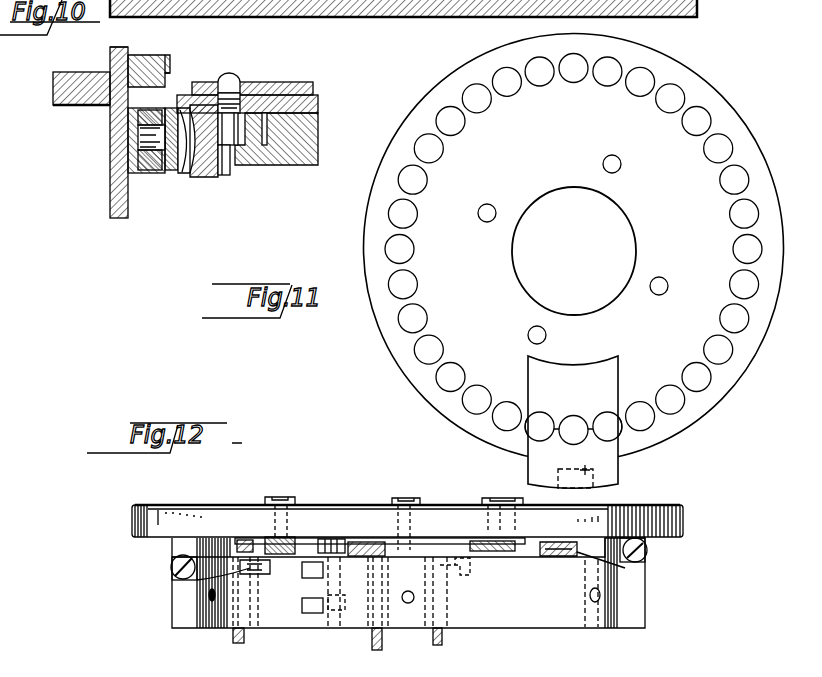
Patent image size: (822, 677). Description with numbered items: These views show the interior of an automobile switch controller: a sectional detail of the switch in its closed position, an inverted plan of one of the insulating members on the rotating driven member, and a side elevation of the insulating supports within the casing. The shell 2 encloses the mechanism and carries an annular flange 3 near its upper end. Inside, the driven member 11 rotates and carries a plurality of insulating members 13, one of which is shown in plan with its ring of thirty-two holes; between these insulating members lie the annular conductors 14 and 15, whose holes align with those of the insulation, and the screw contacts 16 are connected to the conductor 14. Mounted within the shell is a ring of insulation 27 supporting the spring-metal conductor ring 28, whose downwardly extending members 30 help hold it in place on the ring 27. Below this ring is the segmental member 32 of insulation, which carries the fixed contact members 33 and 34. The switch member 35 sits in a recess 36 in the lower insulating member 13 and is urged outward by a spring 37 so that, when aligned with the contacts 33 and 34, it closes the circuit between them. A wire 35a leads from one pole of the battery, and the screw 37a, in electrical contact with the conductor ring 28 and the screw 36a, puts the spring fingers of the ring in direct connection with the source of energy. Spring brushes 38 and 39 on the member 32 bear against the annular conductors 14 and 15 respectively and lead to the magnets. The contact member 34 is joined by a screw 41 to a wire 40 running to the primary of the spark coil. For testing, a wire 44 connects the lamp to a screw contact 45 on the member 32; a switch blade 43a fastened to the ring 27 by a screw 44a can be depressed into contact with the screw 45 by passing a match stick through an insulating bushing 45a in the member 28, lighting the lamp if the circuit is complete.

In FIG. 10, the shell 2 is at (115, 200).
In FIG. 10, the annular flange 3 is at (52, 90).
In FIG. 10, the driven member 11 is at (318, 128).
In FIG. 10, the insulating members 13 is at (318, 97).
In FIG. 11, the insulating members 13 is at (617, 194).
In FIG. 10, the annular conductor 14 is at (270, 82).
In FIG. 10, the annular conductor 15 is at (266, 147).
In FIG. 10, the screw contacts 16 is at (233, 80).
In FIG. 10, the ring of insulation 27 is at (126, 67).
In FIG. 12, the ring of insulation 27 is at (140, 520).
In FIG. 10, the conductor ring 28 is at (143, 56).
In FIG. 12, the conductor ring 28 is at (195, 505).
In FIG. 10, the downwardly extending members 30 is at (172, 63).
In FIG. 10, the segmental member 32 is at (128, 160).
In FIG. 12, the segmental member 32 is at (180, 612).
In FIG. 10, the fixed contact member 33 is at (140, 120).
In FIG. 12, the fixed contact member 33 is at (312, 572).
In FIG. 10, the fixed contact member 34 is at (128, 172).
In FIG. 12, the fixed contact member 34 is at (312, 614).
In FIG. 10, the switch member 35 is at (168, 176).
In FIG. 10, the recess 36 is at (185, 178).
In FIG. 11, the recess 36 is at (598, 470).
In FIG. 10, the spring 37 is at (207, 180).
In FIG. 12, the spring brush 38 is at (625, 568).
In FIG. 12, the spring brush 39 is at (172, 566).
In FIG. 12, the wire 40 is at (384, 642).
In FIG. 12, the screw 41 is at (340, 545).
In FIG. 12, the wire 44 is at (444, 642).
In FIG. 12, the screw contact 45 is at (497, 548).
In FIG. 12, the wire 35a is at (238, 640).
In FIG. 12, the screw 36a is at (297, 538).
In FIG. 12, the screw 37a is at (286, 497).
In FIG. 12, the switch blade 43a is at (430, 537).
In FIG. 12, the screw 44a is at (404, 497).
In FIG. 12, the bushing 45a is at (508, 497).